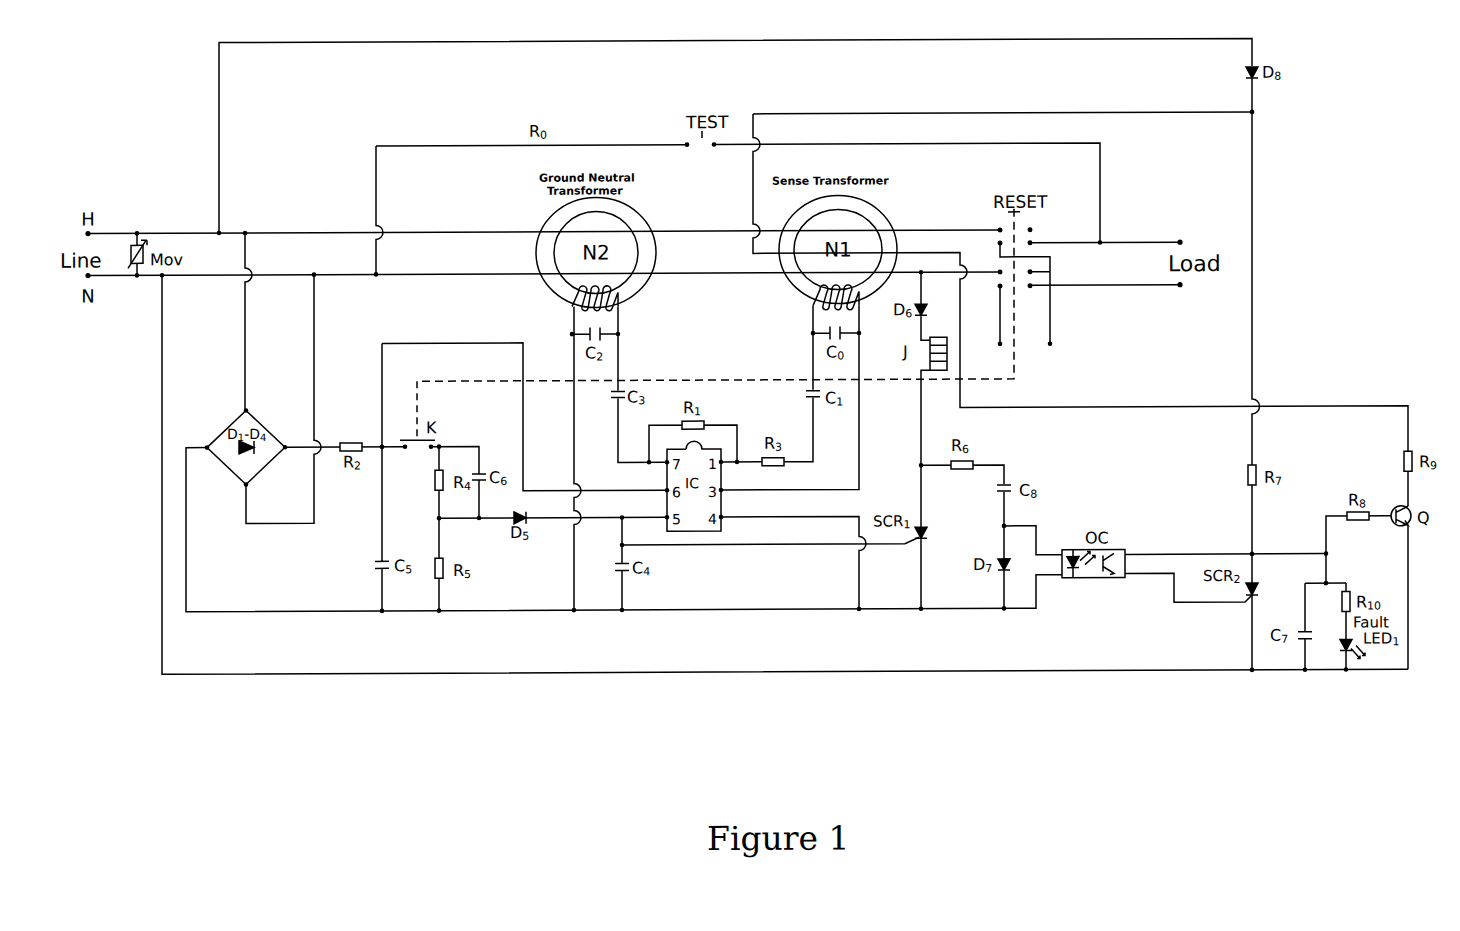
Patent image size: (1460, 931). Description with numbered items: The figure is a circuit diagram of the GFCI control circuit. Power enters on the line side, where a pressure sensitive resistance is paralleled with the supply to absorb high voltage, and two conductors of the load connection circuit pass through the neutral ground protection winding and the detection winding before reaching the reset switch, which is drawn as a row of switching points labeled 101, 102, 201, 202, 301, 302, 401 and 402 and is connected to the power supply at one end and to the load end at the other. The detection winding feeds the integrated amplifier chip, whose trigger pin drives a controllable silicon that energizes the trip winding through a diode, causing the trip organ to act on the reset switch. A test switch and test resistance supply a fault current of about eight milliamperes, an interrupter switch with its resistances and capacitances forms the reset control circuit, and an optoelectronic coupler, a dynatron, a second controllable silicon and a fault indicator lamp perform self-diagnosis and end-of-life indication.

The reset switch fixed contact on hot line input 101 is at (998, 229).
The reset switch fixed contact on hot line output 102 is at (1033, 229).
The reset switch contact on test loop 201 is at (998, 244).
The reset switch contact to load hot terminal 202 is at (1033, 245).
The reset switch fixed contact on neutral line input 301 is at (998, 272).
The reset switch fixed contact to neutral load 302 is at (1033, 275).
The reset switch auxiliary contact 401 is at (999, 288).
The reset switch auxiliary contact to load neutral 402 is at (1031, 288).